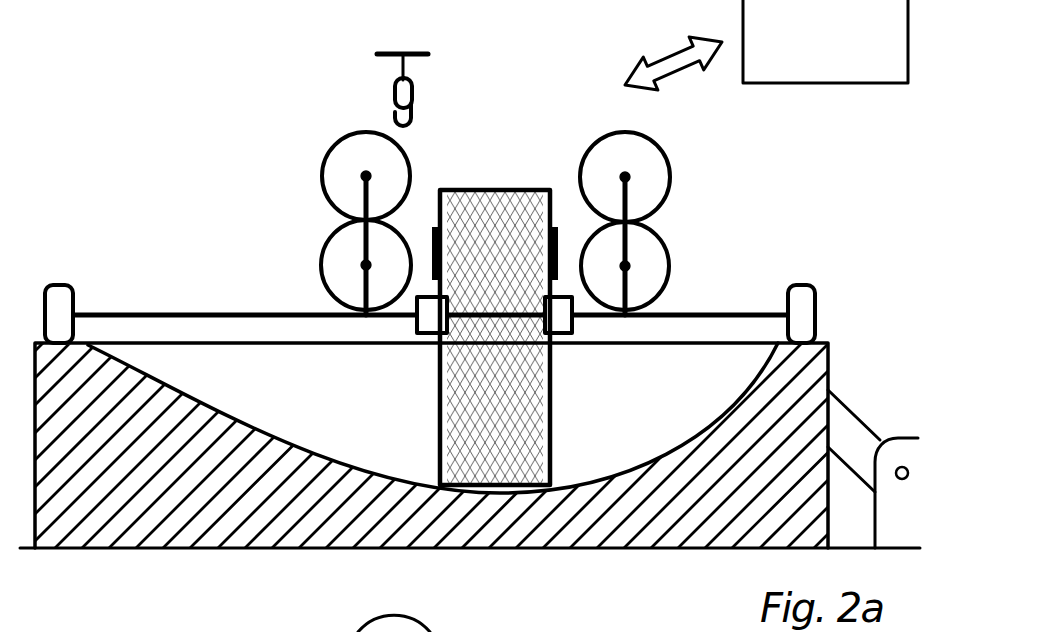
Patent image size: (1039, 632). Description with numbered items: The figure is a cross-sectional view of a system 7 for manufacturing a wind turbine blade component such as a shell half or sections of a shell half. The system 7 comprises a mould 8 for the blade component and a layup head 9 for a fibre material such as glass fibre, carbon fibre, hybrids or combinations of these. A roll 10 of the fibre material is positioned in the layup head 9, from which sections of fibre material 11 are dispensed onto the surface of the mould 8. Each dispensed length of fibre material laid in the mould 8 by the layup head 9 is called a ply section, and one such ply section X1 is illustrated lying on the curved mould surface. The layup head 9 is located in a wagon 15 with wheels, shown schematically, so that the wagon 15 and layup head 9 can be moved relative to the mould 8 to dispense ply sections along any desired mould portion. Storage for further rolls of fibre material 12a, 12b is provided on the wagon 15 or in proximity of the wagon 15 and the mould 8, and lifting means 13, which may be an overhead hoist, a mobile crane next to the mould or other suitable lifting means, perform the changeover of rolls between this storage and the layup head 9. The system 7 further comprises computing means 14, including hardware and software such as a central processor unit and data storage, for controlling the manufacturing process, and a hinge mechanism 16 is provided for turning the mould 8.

The system for manufacturing a wind turbine blade component 7 is at (131, 228).
The mould 8 is at (713, 433).
The ply section X1 is at (675, 462).
The layup head 9 is at (428, 346).
The roll of fibre material 10 is at (541, 190).
The fibre material 11 is at (549, 378).
The stored roll of fibre material 12a is at (331, 218).
The stored roll of fibre material 12b is at (662, 237).
The lifting means 13 is at (395, 86).
The computing means 14 is at (878, 84).
The wagon 15 is at (815, 296).
The hinge mechanism 16 is at (898, 437).